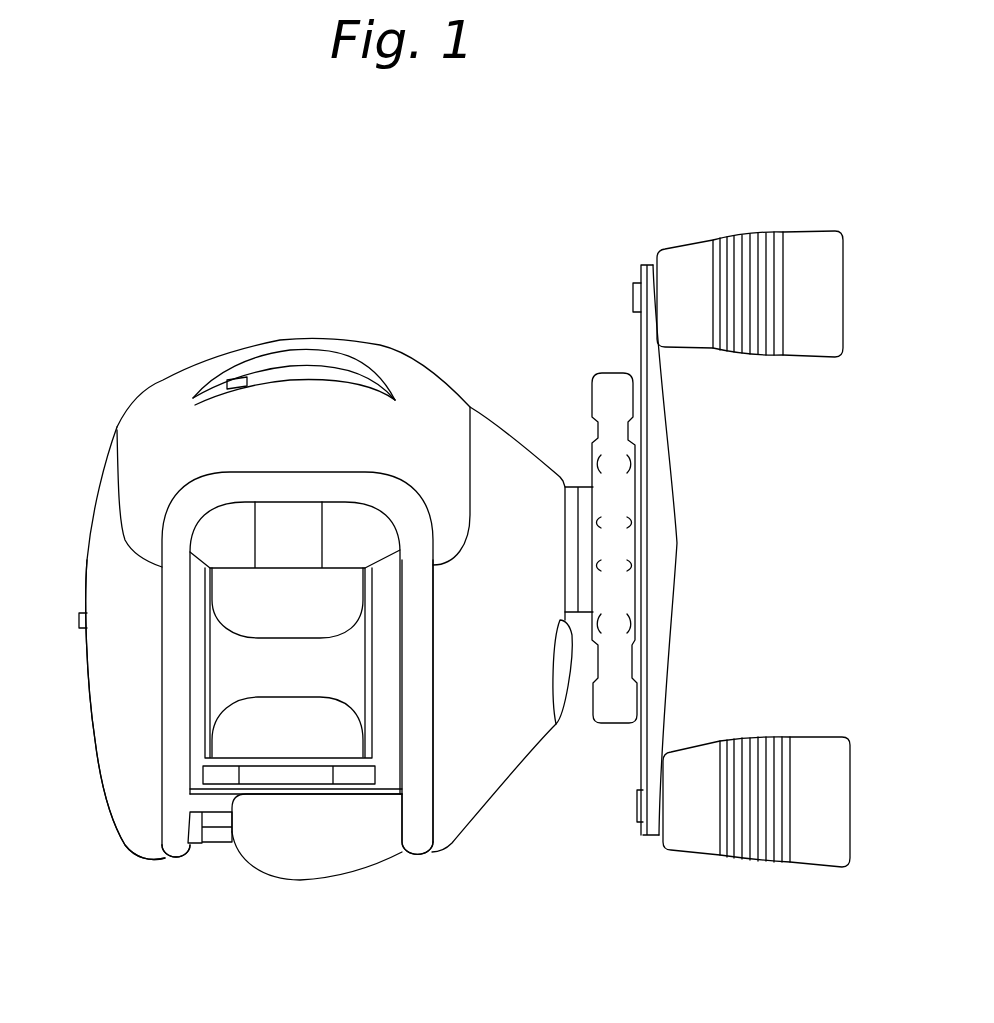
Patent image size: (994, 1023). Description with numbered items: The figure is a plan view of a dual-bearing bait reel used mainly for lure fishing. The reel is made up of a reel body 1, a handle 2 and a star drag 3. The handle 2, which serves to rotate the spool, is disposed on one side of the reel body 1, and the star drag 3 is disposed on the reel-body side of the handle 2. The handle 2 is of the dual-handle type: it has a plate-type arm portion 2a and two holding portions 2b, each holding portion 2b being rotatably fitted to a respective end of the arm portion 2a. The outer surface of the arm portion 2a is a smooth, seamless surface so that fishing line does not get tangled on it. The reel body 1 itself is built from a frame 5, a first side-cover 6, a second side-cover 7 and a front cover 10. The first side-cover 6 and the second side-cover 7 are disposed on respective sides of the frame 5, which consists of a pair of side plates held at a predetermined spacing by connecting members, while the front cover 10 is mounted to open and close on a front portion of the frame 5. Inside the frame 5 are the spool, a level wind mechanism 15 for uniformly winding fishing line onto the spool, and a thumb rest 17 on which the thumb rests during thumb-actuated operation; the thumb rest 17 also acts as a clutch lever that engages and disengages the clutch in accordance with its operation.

The reel body 1 is at (135, 388).
The handle 2 is at (741, 511).
The arm portion 2a is at (678, 522).
The holding portions 2b is at (752, 235).
The star drag 3 is at (600, 392).
The frame 5 is at (163, 862).
The first side-cover 6 is at (112, 810).
The second side-cover 7 is at (455, 810).
The front cover 10 is at (322, 400).
The level wind mechanism 15 is at (240, 367).
The thumb rest 17 is at (300, 840).